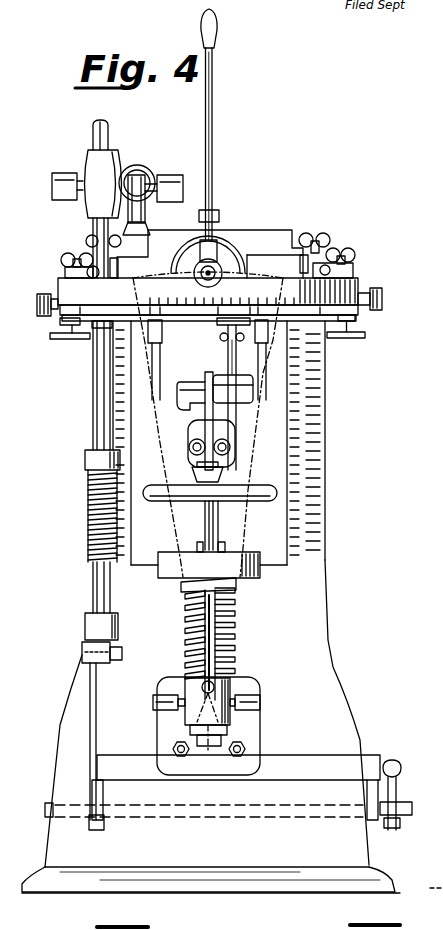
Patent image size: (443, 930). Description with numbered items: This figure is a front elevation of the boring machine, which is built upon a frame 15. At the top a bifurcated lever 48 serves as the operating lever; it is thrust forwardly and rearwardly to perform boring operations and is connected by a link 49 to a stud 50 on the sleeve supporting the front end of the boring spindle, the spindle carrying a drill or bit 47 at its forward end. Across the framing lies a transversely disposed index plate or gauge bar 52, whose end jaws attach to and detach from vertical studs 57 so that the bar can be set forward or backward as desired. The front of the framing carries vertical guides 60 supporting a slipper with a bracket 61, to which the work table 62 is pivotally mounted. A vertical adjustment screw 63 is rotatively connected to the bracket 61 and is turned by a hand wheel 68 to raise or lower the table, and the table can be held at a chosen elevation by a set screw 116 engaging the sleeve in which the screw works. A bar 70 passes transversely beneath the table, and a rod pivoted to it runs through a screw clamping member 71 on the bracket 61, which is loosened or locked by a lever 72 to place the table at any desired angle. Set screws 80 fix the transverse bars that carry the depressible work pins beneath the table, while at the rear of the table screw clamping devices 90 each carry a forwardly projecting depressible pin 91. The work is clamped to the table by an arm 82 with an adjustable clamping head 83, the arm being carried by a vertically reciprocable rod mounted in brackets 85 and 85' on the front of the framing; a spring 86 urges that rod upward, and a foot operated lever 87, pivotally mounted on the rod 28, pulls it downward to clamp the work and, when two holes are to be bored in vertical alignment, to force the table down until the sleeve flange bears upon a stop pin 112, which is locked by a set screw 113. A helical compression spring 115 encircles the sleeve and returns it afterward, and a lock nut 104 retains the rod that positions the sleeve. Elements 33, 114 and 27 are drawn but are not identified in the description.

The bifurcated lever 48 is at (214, 82).
The arm 82 is at (108, 167).
The adjustable clamping head 83 is at (147, 231).
The link 49 is at (199, 217).
The stud 50 is at (182, 251).
The pivot 33 is at (229, 255).
The drill or bit 47 is at (228, 239).
The index plate or gauge bar 52 is at (273, 236).
The vertical studs 57 is at (310, 234).
The screw clamping devices 90 is at (70, 269).
The depressible pin 91 is at (86, 274).
The table 62 is at (209, 294).
The bar 70 is at (358, 316).
The set screws 80 is at (347, 338).
The bracket 85' is at (85, 345).
The vertical guides 60 is at (122, 439).
The bracket 61 is at (208, 394).
The screw clamping member 71 is at (247, 392).
The lever 72 is at (188, 407).
The hand wheel 68 is at (182, 498).
The lock nut 104 is at (219, 550).
The vertical adjustment screw 63 is at (209, 555).
The stop pin 112 is at (238, 639).
The helical compression spring 115 is at (184, 619).
The spring lower end 114 is at (186, 660).
The set screw 113 is at (262, 700).
The set screw 116 is at (153, 702).
The foot operated lever 87 is at (305, 763).
The rod 28 is at (317, 816).
The clamp screw 27 is at (401, 774).
The frame 15 is at (232, 726).
The spring 86 is at (88, 555).
The bracket 85 is at (81, 638).